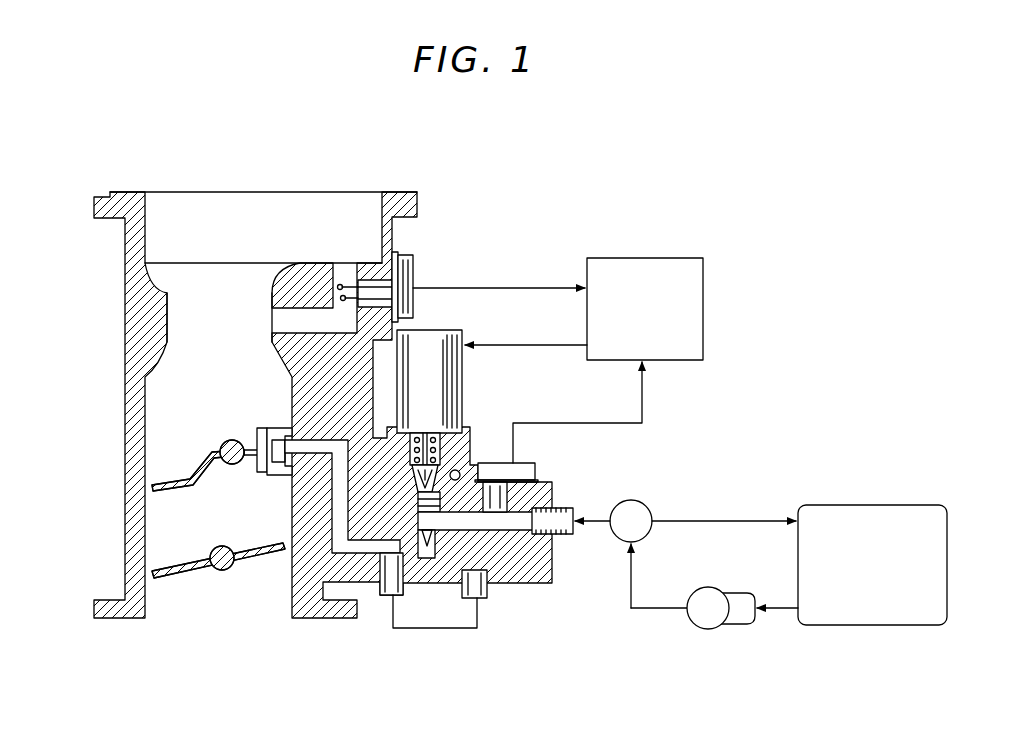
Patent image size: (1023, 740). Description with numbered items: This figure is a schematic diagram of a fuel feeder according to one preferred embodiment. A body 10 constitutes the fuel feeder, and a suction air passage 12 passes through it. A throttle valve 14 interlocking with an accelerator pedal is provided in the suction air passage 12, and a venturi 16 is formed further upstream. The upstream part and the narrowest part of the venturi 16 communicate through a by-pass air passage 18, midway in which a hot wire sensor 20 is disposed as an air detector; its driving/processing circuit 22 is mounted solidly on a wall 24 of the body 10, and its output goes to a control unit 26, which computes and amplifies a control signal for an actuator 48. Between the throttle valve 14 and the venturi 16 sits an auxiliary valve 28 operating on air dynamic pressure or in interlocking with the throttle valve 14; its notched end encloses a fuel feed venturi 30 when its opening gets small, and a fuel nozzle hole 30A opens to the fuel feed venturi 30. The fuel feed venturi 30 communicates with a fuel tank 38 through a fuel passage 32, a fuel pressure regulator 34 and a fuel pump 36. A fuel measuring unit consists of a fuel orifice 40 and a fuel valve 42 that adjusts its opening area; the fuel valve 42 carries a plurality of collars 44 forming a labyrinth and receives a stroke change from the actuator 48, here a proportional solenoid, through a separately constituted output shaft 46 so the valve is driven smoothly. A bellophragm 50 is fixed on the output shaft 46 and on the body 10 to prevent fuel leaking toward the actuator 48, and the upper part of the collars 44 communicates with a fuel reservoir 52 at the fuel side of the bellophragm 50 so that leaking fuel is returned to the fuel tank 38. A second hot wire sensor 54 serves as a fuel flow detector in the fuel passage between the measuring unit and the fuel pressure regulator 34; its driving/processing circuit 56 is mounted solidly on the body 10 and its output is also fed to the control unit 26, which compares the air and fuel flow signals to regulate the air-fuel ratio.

The body 10 is at (135, 192).
The suction air passage 12 is at (278, 195).
The throttle valve 14 is at (184, 575).
The venturi 16 is at (175, 313).
The by-pass air passage 18 is at (356, 272).
The hot wire sensor 20 is at (343, 283).
The driving/processing circuit 22 is at (413, 276).
The wall 24 is at (412, 332).
The control unit 26 is at (657, 262).
The auxiliary valve 28 is at (172, 482).
The fuel feed venturi 30 is at (257, 436).
The fuel nozzle hole 30A is at (283, 430).
The fuel passage 32 is at (338, 503).
The fuel pressure regulator 34 is at (648, 530).
The fuel pump 36 is at (710, 628).
The fuel tank 38 is at (880, 618).
The fuel orifice 40 is at (460, 598).
The fuel valve 42 is at (430, 535).
The collars 44 is at (440, 503).
The output shaft 46 is at (472, 450).
The actuator 48 is at (462, 375).
The bellophragm 50 is at (374, 430).
The fuel reservoir 52 is at (416, 470).
The hot wire sensor 54 is at (553, 568).
The driving/processing circuit 56 is at (536, 470).